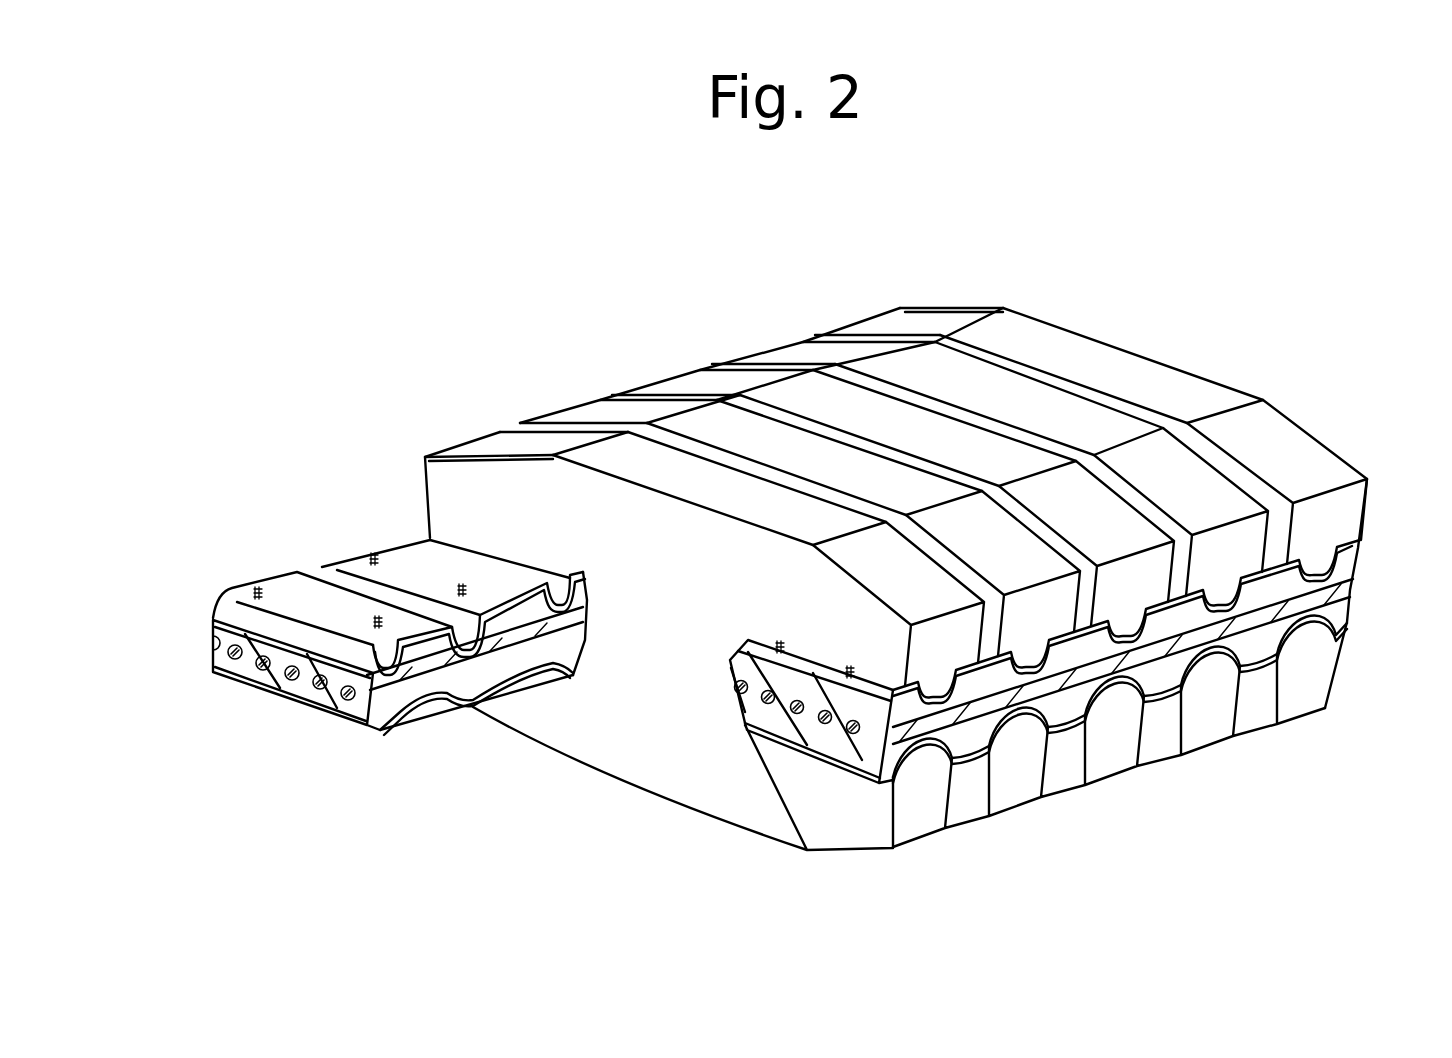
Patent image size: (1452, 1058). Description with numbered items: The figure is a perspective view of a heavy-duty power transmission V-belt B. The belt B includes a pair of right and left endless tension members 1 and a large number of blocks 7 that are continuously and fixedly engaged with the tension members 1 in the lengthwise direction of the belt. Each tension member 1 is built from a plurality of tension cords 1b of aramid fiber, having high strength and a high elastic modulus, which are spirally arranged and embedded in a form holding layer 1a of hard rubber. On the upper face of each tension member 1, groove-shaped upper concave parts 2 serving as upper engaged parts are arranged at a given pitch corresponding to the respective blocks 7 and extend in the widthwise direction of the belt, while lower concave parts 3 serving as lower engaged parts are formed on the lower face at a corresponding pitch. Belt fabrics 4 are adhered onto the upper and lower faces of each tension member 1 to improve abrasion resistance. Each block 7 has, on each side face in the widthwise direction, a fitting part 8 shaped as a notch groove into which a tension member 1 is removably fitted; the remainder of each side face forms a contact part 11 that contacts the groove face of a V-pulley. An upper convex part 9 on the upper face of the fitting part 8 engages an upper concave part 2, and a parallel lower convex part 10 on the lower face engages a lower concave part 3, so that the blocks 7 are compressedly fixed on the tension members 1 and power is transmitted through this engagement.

The heavy-duty power transmission V-belt B is at (268, 272).
The tension member 1 is at (800, 772).
The form holding layer 1a is at (830, 740).
The tension cords 1b is at (795, 762).
The upper concave part 2 is at (427, 545).
The lower concave part 3 is at (1213, 700).
The belt fabric 4 is at (745, 650).
The block 7 is at (1110, 331).
The fitting part 8 is at (745, 670).
The upper convex part 9 is at (1033, 667).
The lower convex part 10 is at (1107, 708).
The contact part 11 is at (1335, 525).